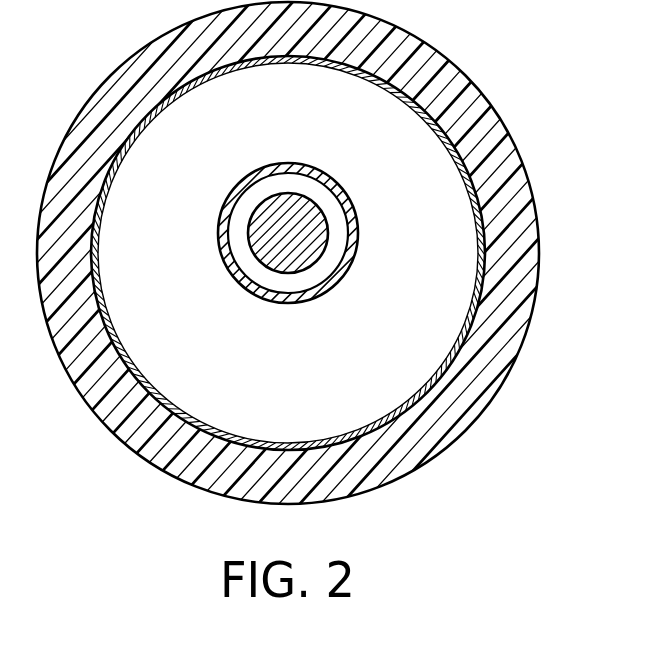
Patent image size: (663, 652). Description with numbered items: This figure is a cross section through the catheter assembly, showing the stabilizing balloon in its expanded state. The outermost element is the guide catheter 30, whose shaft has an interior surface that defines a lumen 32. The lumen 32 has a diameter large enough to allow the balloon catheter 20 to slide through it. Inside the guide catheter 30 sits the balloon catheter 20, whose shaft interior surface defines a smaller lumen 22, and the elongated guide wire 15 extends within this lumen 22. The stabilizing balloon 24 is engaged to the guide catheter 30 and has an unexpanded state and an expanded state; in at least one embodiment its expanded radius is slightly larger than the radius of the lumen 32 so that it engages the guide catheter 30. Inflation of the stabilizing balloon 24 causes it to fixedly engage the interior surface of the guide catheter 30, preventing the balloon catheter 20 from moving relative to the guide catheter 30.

The elongated guide wire 15 is at (282, 220).
The balloon catheter 20 is at (242, 283).
The lumen 22 is at (352, 252).
The stabilizing balloon 24 is at (455, 358).
The guide catheter 30 is at (404, 462).
The lumen 32 is at (393, 96).